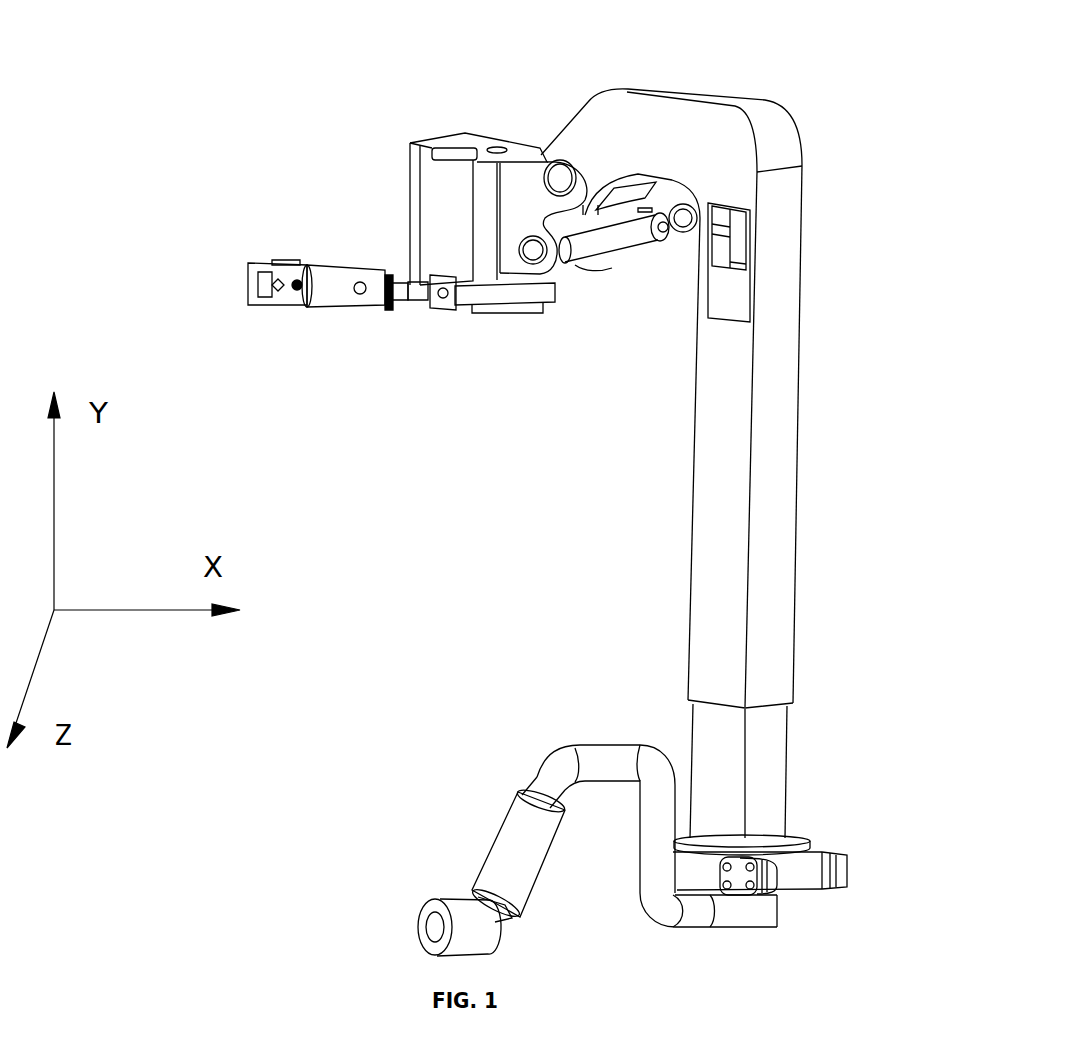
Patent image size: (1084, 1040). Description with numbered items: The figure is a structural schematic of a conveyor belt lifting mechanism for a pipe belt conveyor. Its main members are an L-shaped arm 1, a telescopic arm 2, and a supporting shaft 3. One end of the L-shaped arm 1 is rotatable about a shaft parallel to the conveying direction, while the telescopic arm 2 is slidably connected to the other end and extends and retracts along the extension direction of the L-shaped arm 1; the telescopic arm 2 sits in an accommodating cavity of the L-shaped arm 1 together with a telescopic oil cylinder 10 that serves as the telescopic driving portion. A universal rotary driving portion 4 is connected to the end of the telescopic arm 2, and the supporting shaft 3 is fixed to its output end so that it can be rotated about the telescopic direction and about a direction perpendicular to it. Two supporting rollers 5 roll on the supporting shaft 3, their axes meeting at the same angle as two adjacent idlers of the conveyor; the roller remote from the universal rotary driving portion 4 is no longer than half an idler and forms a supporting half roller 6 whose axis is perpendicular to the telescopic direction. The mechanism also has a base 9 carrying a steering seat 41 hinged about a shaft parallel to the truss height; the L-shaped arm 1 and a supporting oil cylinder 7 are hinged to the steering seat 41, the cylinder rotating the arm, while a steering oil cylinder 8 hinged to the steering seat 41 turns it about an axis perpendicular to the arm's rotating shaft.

The L-shaped arm 1 is at (667, 117).
The telescopic arm 2 is at (768, 790).
The supporting shaft 3 is at (613, 763).
The universal rotary driving portion 4 is at (788, 878).
The supporting roller 5 is at (508, 847).
The supporting half roller 6 is at (440, 910).
The supporting oil cylinder 7 is at (620, 242).
The steering oil cylinder 8 is at (340, 297).
The base 9 is at (430, 205).
The telescopic oil cylinder 10 is at (745, 253).
The steering seat 41 is at (512, 310).